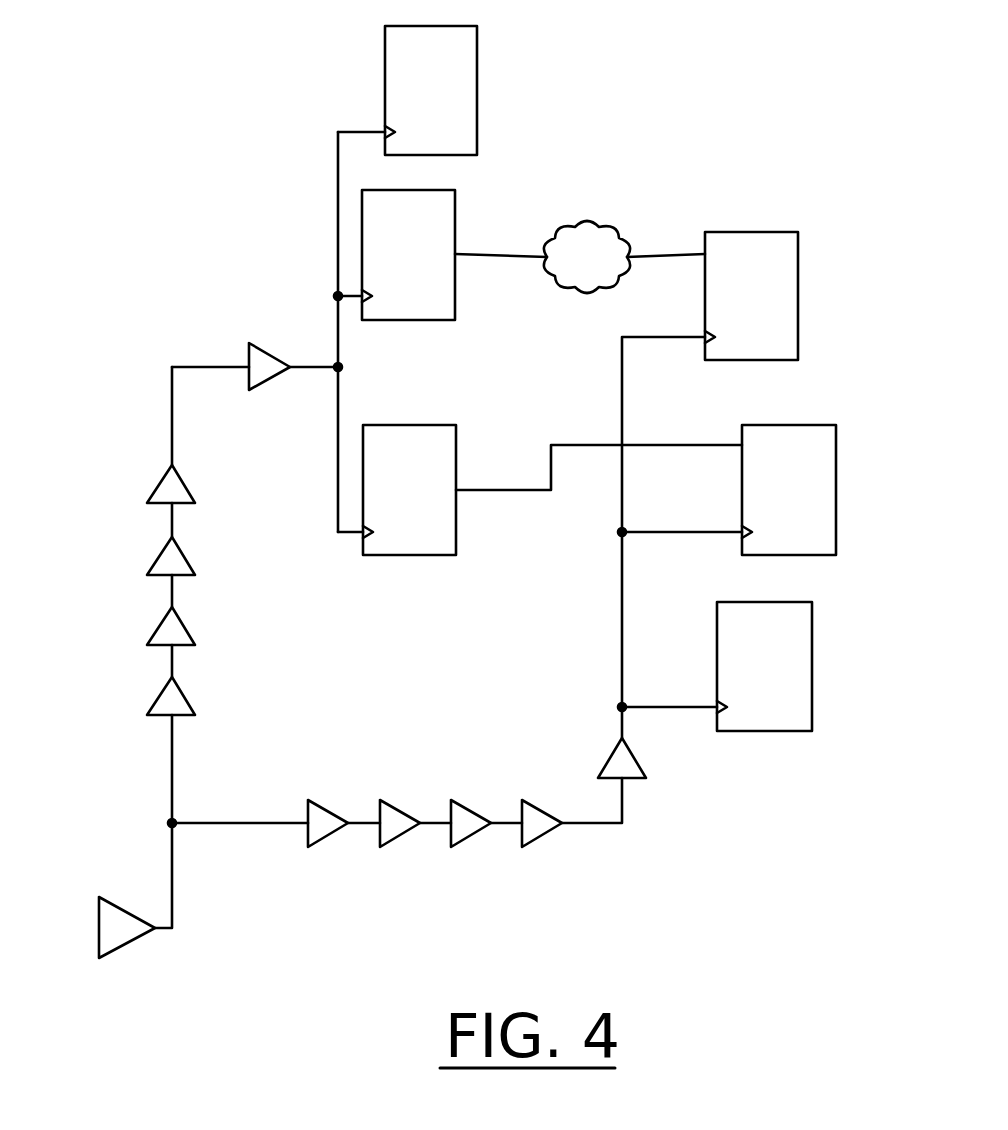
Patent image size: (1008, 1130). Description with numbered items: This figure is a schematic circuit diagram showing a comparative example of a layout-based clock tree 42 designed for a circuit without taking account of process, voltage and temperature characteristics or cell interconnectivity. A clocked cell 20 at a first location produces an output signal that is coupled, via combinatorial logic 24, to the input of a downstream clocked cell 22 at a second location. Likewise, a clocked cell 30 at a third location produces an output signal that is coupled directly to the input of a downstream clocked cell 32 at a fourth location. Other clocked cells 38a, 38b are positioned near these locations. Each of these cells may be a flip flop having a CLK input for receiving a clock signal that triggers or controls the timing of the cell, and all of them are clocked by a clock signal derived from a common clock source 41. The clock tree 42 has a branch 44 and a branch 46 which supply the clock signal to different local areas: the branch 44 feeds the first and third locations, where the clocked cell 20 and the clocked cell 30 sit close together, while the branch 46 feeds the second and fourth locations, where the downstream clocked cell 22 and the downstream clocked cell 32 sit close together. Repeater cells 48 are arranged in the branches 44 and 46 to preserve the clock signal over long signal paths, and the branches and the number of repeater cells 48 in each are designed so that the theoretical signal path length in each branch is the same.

The clocked cell 20 is at (455, 226).
The downstream clocked cell 22 is at (798, 246).
The combinatorial logic 24 is at (606, 232).
The clocked cell 30 is at (456, 437).
The downstream clocked cell 32 is at (836, 448).
The other clocked cell 38a is at (477, 66).
The other clocked cell 38b is at (812, 624).
The common clock source 41 is at (99, 915).
The clock tree 42 is at (112, 712).
The branch 44 is at (170, 363).
The branch 46 is at (622, 823).
The repeater cells 48 is at (135, 483).